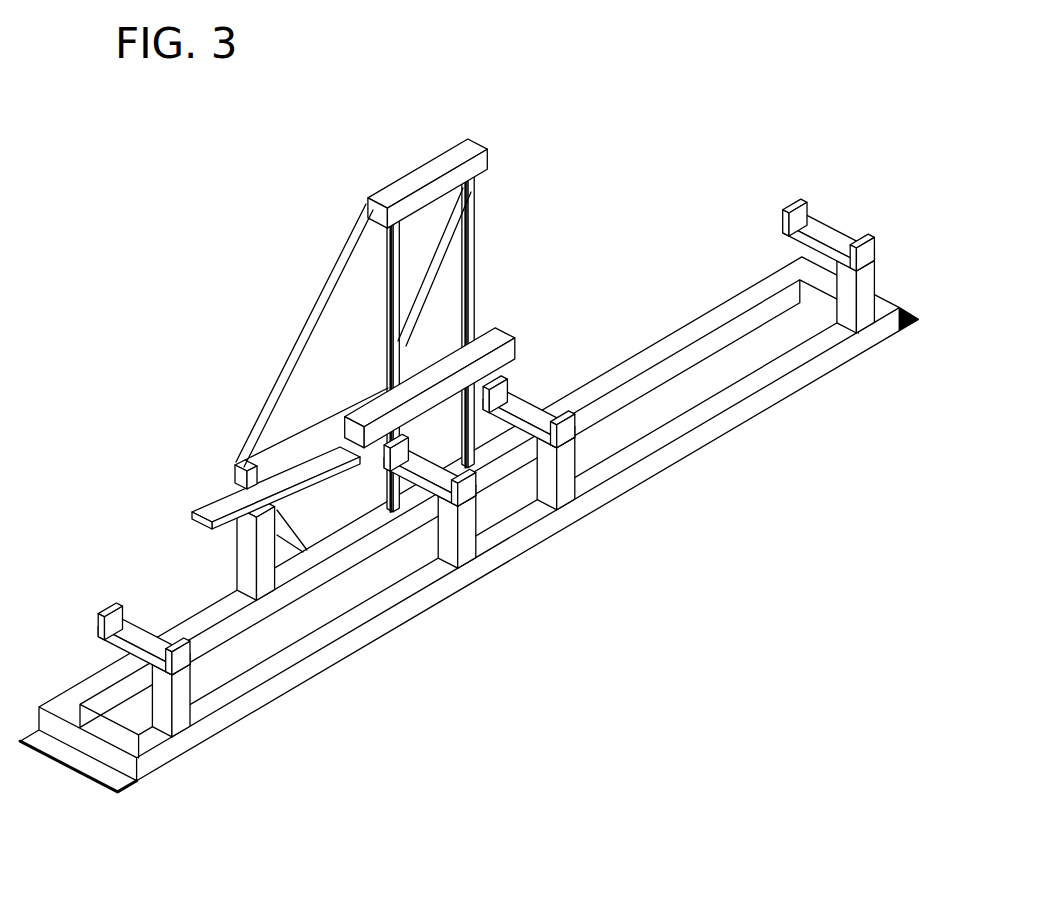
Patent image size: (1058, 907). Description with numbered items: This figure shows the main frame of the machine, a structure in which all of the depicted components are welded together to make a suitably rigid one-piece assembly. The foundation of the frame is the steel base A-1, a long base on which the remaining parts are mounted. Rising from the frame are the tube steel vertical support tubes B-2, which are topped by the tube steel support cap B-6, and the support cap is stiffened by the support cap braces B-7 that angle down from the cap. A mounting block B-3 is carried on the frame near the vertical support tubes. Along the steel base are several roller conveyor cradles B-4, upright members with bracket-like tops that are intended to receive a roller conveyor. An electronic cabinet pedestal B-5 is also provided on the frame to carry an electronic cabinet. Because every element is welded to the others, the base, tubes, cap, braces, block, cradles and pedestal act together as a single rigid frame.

The steel base A-1 is at (53, 747).
The tube steel vertical support tubes B-2 is at (475, 302).
The mounting block B-3 is at (498, 358).
The roller conveyor cradle B-4 is at (820, 238).
The electronic cabinet pedestal B-5 is at (250, 528).
The tube steel support cap B-6 is at (423, 182).
The support cap braces B-7 is at (316, 258).